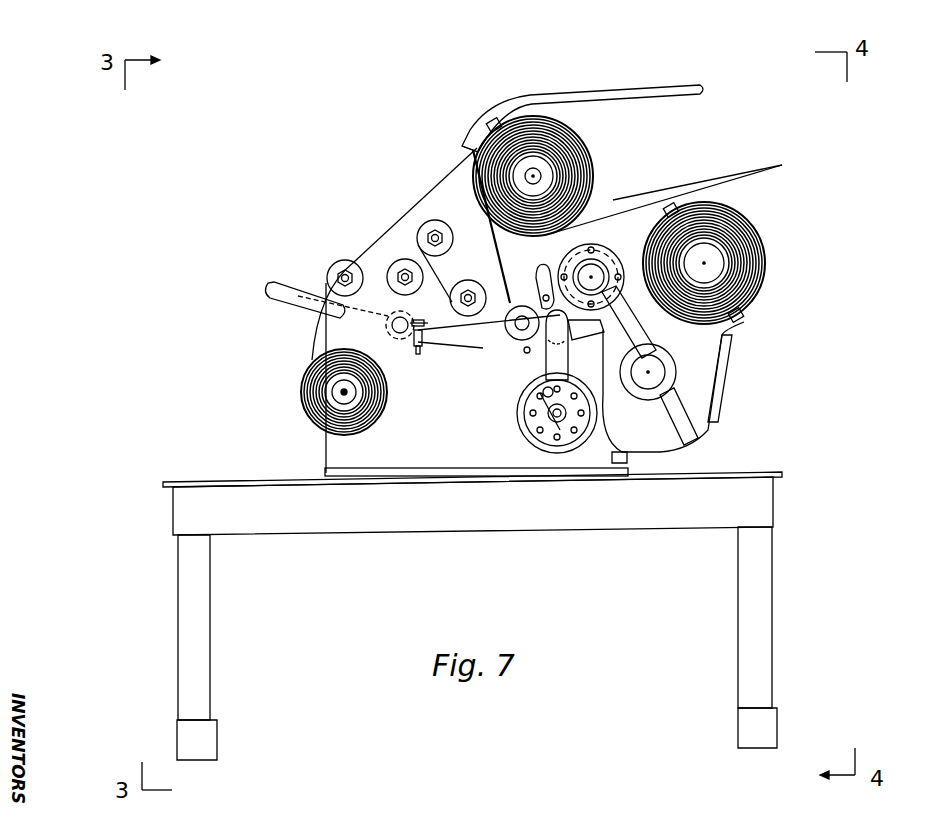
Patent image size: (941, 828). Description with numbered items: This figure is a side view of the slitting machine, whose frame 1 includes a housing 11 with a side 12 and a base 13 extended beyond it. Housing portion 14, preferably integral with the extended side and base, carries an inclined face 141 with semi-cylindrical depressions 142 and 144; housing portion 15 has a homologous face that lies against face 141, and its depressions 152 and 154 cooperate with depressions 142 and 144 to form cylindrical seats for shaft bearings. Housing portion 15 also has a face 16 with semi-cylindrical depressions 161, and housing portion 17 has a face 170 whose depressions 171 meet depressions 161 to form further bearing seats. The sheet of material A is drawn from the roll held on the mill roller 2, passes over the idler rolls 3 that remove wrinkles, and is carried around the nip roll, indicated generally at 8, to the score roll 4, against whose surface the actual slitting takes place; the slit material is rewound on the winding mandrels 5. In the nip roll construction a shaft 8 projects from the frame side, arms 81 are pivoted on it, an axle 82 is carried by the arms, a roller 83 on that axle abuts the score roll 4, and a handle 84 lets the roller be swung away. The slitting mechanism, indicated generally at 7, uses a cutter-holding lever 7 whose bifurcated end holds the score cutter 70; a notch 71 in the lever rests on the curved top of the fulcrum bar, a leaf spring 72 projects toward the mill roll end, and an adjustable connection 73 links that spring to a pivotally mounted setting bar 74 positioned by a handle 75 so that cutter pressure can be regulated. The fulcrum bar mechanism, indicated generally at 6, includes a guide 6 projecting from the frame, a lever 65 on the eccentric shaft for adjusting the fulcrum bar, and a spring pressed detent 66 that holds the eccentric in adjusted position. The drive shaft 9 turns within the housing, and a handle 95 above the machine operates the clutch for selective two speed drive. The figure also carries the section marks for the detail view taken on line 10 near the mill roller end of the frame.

The frame 1 is at (540, 290).
The mill roller 2 is at (332, 393).
The idler rolls 3 is at (450, 290).
The score roll 4 is at (608, 258).
The winding mandrels 5 is at (432, 62).
The fulcrum bar guide 6 is at (562, 448).
The cutter-holding lever 7 is at (490, 346).
The nip roll shaft 8 is at (512, 326).
The drive shaft 9 is at (410, 395).
The section line 10 is at (335, 328).
The housing 11 is at (680, 190).
The side of the frame 12 is at (417, 480).
The base of the frame 13 is at (325, 473).
The housing portion 14 is at (632, 448).
The housing portion 15 is at (590, 225).
The housing face 16 is at (745, 322).
The housing portion 17 is at (760, 257).
The lever 65 is at (548, 400).
The spring pressed detent 66 is at (612, 400).
The score cutter 70 is at (574, 335).
The notch 71 is at (545, 392).
The leaf spring 72 is at (437, 337).
The adjustable connection 73 is at (434, 324).
The setting bar 74 is at (407, 360).
The handle 75 is at (283, 294).
The arms 81 is at (525, 352).
The axle 82 is at (416, 182).
The roller 83 is at (454, 273).
The handle 84 is at (545, 300).
The handle 95 is at (668, 90).
The inclined face 141 is at (598, 183).
The semi-cylindrical depression 142 is at (475, 140).
The semi-cylindrical depression 144 is at (662, 392).
The semi-cylindrical depression 152 is at (593, 140).
The semi-cylindrical depression 154 is at (708, 356).
The semi-cylindrical depressions 161 is at (745, 212).
The face 170 is at (745, 292).
The semi-cylindrical depressions 171 is at (752, 236).
The sheet of material A is at (322, 352).